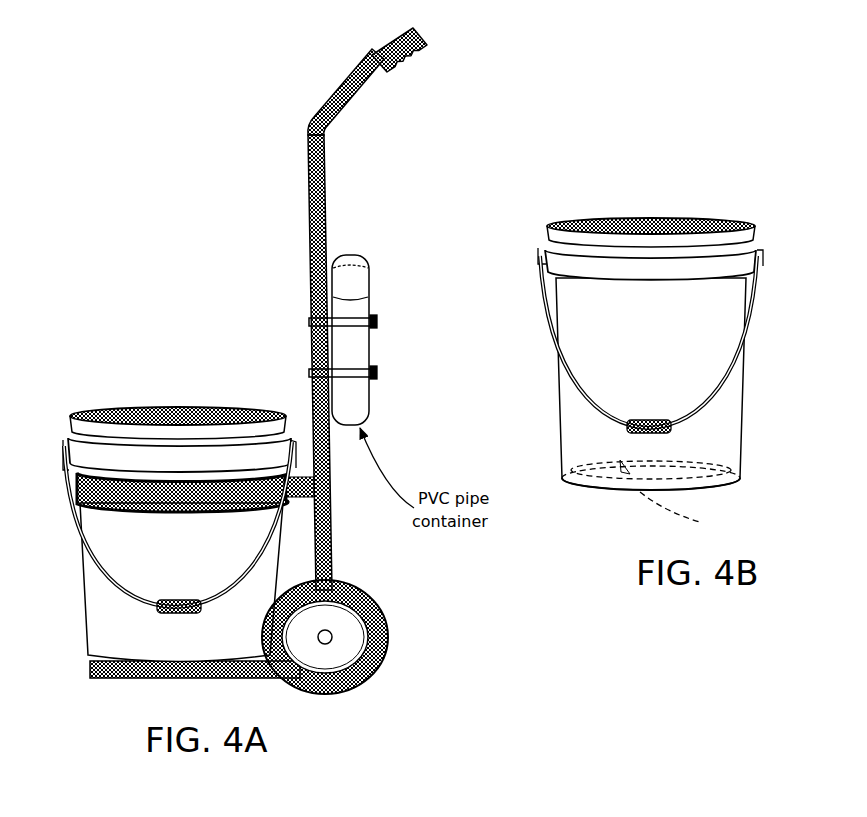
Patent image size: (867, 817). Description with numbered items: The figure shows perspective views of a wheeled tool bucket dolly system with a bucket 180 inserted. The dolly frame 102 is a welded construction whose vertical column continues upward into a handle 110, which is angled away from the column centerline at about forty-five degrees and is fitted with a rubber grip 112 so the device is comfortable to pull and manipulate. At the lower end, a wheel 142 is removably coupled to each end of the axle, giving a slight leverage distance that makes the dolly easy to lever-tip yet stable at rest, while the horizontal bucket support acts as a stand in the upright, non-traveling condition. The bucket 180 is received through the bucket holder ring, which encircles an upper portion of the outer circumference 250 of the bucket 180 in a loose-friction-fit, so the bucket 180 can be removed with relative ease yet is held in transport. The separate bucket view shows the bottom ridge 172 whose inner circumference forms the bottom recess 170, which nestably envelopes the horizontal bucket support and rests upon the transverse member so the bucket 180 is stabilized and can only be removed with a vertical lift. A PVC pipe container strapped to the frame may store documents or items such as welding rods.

In FIG. 4A, the dolly frame 102 is at (300, 238).
In FIG. 4A, the handle 110 is at (360, 100).
In FIG. 4A, the rubber grip 112 is at (428, 55).
In FIG. 4A, the wheel 142 is at (398, 638).
In FIG. 4A, the bucket 180 is at (75, 404).
In FIG. 4B, the bucket 180 is at (557, 214).
In FIG. 4B, the outer circumference 250 is at (548, 360).
In FIG. 4B, the bottom ridge 172 is at (594, 496).
In FIG. 4B, the bottom recess 170 is at (700, 522).